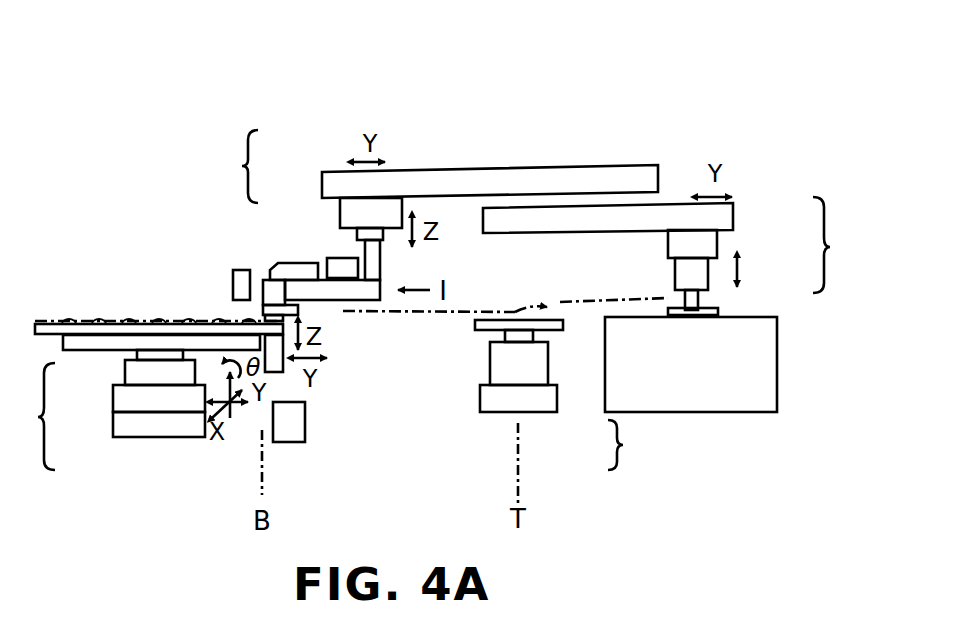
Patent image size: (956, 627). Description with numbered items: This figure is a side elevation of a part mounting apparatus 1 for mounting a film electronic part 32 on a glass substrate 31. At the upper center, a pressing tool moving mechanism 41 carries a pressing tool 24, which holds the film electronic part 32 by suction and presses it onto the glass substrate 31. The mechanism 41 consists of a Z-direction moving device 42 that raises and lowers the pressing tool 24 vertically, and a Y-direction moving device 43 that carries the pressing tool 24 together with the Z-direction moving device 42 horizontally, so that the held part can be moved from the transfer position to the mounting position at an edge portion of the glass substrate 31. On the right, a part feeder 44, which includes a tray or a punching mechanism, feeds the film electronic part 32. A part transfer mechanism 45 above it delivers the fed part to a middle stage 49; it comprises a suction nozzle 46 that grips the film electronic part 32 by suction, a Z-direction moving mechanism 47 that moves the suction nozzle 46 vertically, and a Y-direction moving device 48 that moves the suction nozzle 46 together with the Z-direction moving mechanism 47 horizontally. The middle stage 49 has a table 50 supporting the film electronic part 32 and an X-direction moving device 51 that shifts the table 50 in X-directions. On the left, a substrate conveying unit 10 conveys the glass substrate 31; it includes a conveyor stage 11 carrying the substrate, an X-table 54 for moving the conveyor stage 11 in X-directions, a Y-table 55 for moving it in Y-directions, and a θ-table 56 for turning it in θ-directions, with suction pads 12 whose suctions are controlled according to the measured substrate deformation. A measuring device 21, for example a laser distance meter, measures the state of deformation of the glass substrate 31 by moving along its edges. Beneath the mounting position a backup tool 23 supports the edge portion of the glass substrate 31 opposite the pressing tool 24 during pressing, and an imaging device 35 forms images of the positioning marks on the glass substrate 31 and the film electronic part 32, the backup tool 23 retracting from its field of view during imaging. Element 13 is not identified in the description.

The part mounting apparatus 1 is at (545, 70).
The substrate conveying unit 10 is at (29, 416).
The conveyor stage 11 is at (112, 347).
The suction pads 12 is at (85, 339).
The substrate 13 is at (113, 333).
The measuring device 21 is at (245, 288).
The backup tool 23 is at (285, 372).
The pressing tool 24 is at (392, 273).
The glass substrate 31 is at (66, 321).
The film electronic part 32 is at (308, 313).
The imaging device 35 is at (297, 423).
The pressing tool moving mechanism 41 is at (233, 166).
The Z-direction moving device 42 is at (350, 215).
The Y-direction moving device 43 is at (343, 178).
The part feeder 44 is at (762, 343).
The part transfer mechanism 45 is at (838, 245).
The suction nozzle 46 is at (697, 295).
The Z-direction moving mechanism 47 is at (707, 243).
The Y-direction moving device 48 is at (728, 212).
The middle stage 49 is at (632, 445).
The table 50 is at (547, 322).
The X-direction moving device 51 is at (547, 403).
The X-table 54 is at (127, 398).
The Y-table 55 is at (127, 423).
The theta rotation table 56 is at (125, 368).